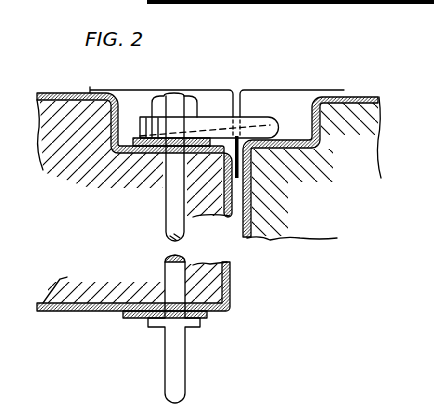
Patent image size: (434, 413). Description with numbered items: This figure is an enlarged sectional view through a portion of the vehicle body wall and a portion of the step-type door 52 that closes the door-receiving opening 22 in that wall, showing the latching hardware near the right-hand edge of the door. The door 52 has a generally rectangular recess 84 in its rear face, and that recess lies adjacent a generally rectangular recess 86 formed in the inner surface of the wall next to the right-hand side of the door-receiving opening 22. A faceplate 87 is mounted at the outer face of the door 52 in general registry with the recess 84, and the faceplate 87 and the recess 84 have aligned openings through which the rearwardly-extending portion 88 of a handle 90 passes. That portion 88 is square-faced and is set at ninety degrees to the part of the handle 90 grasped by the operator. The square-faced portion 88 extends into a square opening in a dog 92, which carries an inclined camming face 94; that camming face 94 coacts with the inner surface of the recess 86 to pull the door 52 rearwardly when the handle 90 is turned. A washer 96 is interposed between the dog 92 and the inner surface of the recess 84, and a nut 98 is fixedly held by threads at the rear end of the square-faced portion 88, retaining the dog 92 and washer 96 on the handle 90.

The door-receiving opening 22 is at (250, 232).
The door 52 is at (62, 92).
The recess 84 is at (133, 138).
The recess 86 is at (298, 132).
The faceplate 87 is at (135, 320).
The rearwardly-extending portion 88 is at (172, 209).
The handle 90 is at (180, 357).
The dog 92 is at (204, 122).
The inclined camming face 94 is at (263, 155).
The washer 96 is at (134, 158).
The nut 98 is at (163, 97).